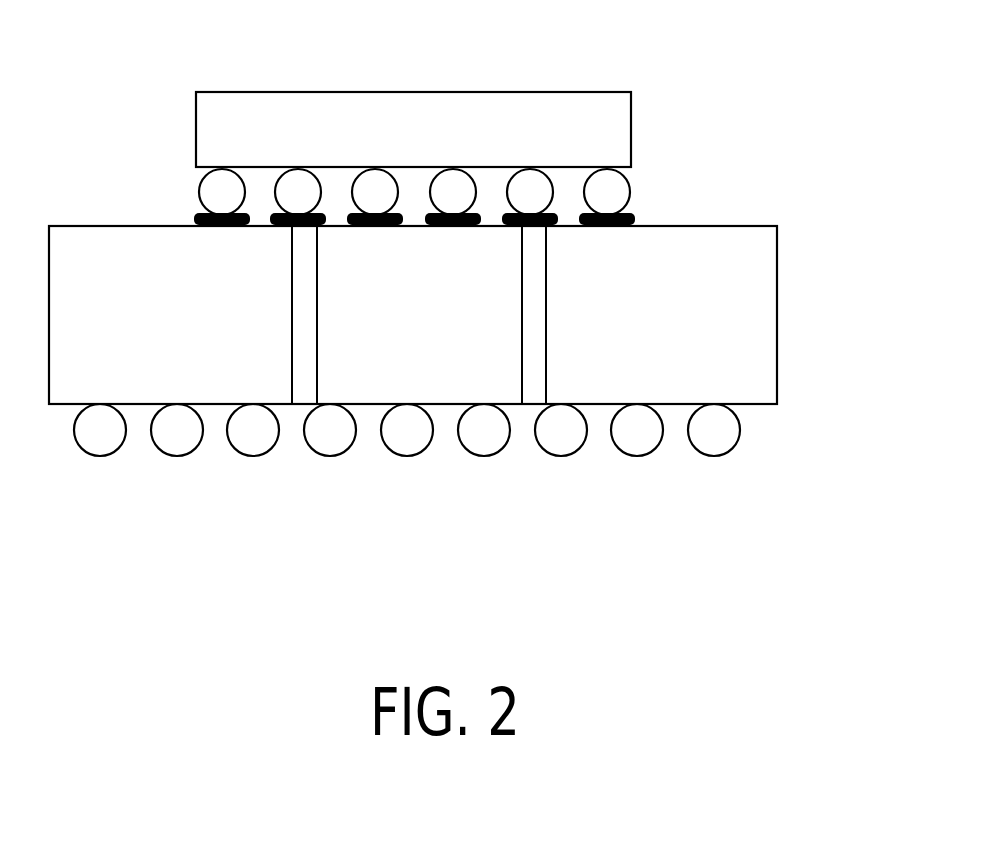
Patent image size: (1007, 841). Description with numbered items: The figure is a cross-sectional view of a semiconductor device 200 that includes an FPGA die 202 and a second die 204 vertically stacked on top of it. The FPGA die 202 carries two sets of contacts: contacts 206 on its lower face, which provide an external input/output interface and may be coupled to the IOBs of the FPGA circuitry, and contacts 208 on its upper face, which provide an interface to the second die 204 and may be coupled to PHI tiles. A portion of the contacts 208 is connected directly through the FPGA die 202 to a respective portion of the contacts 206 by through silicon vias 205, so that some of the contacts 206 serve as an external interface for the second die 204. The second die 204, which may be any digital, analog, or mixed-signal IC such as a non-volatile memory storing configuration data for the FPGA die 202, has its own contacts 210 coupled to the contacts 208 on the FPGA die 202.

The semiconductor device 200 is at (345, 582).
The FPGA die 202 is at (777, 340).
The second die 204 is at (567, 91).
The through silicon vias 205 is at (317, 332).
The contacts 206 is at (712, 455).
The contacts 208 is at (633, 215).
The contacts 210 is at (198, 192).